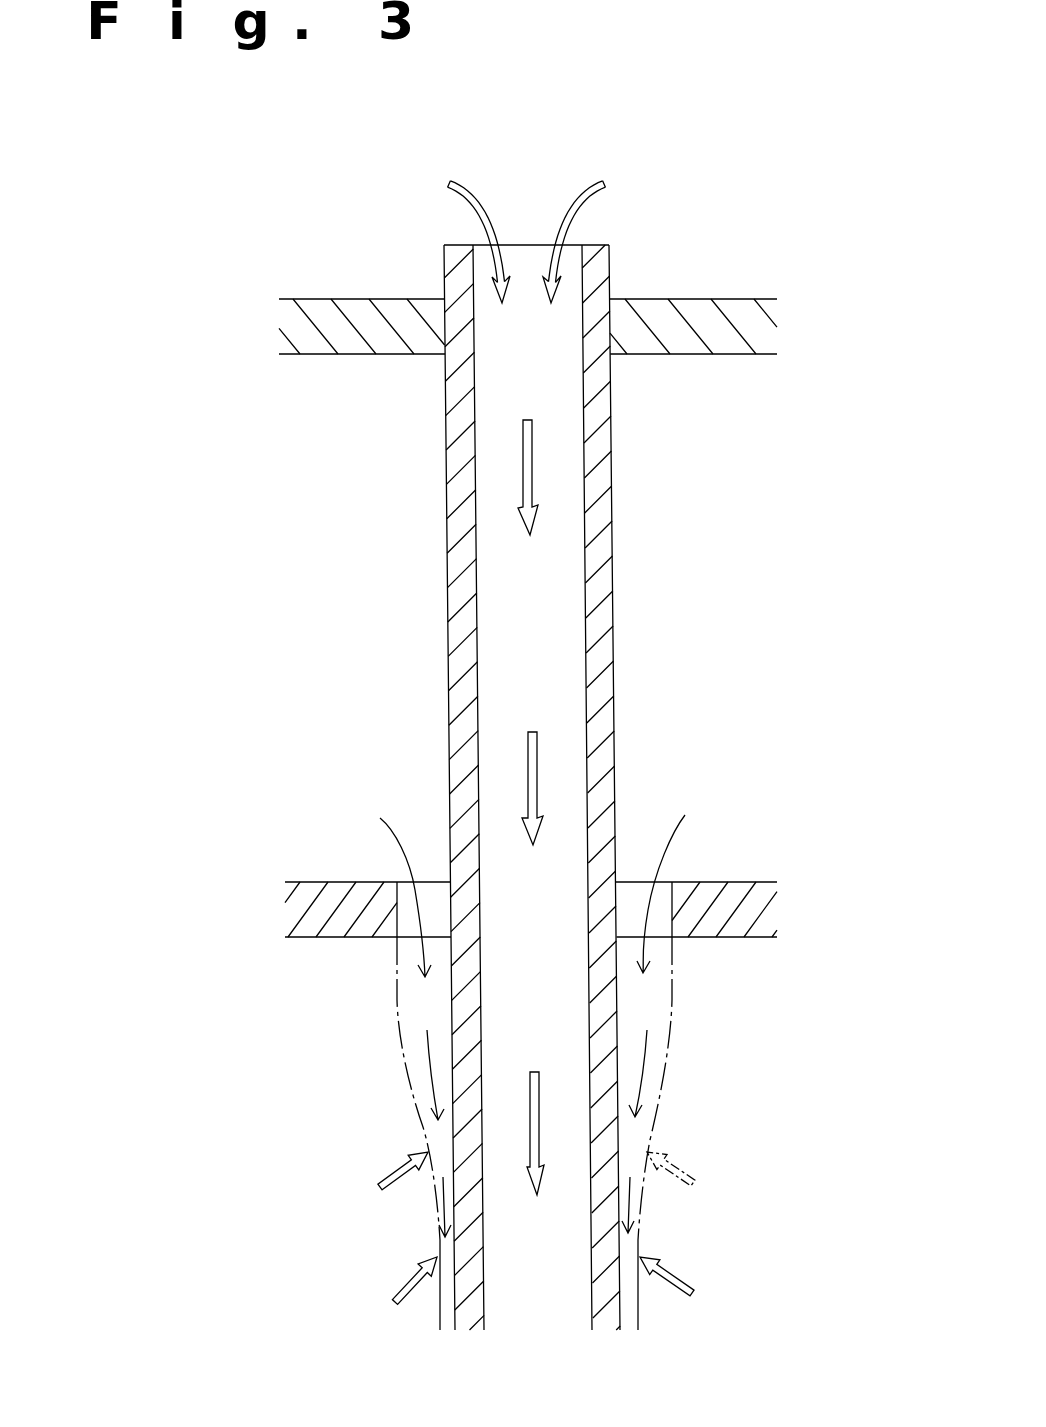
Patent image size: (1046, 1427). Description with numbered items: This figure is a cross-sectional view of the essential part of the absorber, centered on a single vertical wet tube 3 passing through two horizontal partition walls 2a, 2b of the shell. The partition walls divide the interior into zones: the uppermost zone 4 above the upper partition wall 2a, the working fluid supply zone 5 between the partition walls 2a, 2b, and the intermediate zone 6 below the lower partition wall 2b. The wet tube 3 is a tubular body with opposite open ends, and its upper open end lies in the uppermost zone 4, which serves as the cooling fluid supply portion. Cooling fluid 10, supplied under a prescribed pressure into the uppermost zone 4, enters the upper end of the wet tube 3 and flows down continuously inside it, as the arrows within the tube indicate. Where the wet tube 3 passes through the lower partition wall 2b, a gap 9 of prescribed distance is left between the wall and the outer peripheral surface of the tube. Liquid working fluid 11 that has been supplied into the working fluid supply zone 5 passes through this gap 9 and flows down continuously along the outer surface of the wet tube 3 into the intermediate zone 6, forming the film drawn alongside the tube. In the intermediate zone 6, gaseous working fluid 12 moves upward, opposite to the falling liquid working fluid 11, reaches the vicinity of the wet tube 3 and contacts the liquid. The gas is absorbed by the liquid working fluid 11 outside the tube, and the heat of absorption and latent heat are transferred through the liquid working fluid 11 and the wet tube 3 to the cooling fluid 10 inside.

The partition wall 2a is at (688, 348).
The partition wall 2b is at (717, 880).
The wet tube 3 is at (607, 730).
The uppermost zone 4 is at (686, 228).
The working fluid supply zone 5 is at (688, 632).
The intermediate zone 6 is at (718, 1102).
The gap 9 is at (633, 890).
The cooling fluid 10 is at (535, 487).
The liquid working fluid 11 is at (668, 1047).
The gaseous working fluid 12 is at (687, 1282).